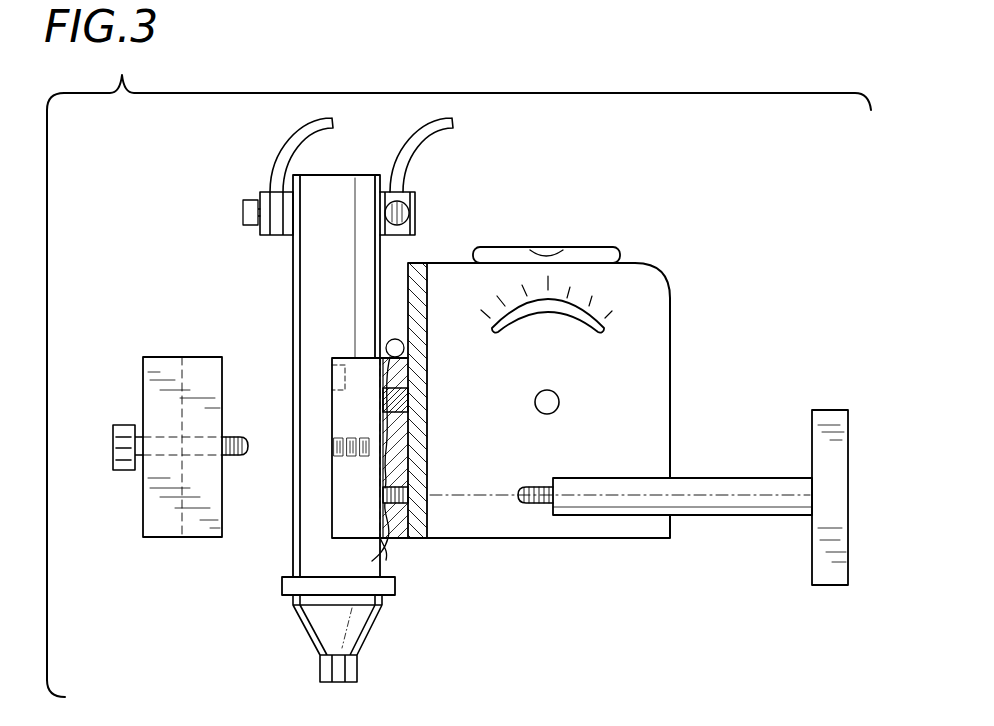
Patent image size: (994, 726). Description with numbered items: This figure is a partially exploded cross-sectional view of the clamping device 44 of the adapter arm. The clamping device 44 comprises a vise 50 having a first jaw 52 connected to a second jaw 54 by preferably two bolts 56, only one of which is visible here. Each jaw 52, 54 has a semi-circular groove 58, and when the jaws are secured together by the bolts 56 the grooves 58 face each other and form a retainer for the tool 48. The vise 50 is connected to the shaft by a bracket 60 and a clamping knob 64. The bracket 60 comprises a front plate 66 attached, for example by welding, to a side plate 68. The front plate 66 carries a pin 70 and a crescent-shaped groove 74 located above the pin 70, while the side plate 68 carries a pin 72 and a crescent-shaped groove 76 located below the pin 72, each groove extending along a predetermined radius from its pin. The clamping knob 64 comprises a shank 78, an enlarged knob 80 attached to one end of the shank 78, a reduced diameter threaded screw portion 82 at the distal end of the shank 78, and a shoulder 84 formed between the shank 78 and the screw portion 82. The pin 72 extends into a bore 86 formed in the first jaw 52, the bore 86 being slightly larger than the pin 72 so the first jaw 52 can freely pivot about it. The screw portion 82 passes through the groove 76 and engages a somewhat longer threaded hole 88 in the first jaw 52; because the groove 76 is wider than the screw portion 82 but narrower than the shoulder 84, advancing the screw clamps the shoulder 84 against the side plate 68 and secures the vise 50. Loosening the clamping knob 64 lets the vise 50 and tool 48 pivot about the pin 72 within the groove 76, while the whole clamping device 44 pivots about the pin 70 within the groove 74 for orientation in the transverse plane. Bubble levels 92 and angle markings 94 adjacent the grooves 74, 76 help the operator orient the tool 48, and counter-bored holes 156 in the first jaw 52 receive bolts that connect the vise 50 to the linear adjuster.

The clamping device 44 is at (690, 193).
The tool 48 is at (291, 548).
The vise 50 is at (209, 548).
The first jaw 52 is at (345, 358).
The second jaw 54 is at (175, 357).
The bolt 56 is at (112, 445).
The semi-circular groove 58 is at (195, 510).
The bracket 60 is at (493, 542).
The clamping knob 64 is at (758, 476).
The front plate 66 is at (670, 402).
The side plate 68 is at (425, 263).
The pin 70 is at (560, 400).
The pin 72 is at (428, 401).
The crescent-shaped groove 74 is at (563, 327).
The crescent-shaped groove 76 is at (430, 488).
The shank 78 is at (752, 517).
The enlarged knob 80 is at (830, 587).
The threaded screw portion 82 is at (524, 505).
The shoulder 84 is at (547, 518).
The bore 86 is at (340, 392).
The threaded hole 88 is at (385, 493).
The bubble level 92 is at (577, 247).
The angle markings 94 is at (612, 292).
The counter-bored hole 156 is at (322, 368).